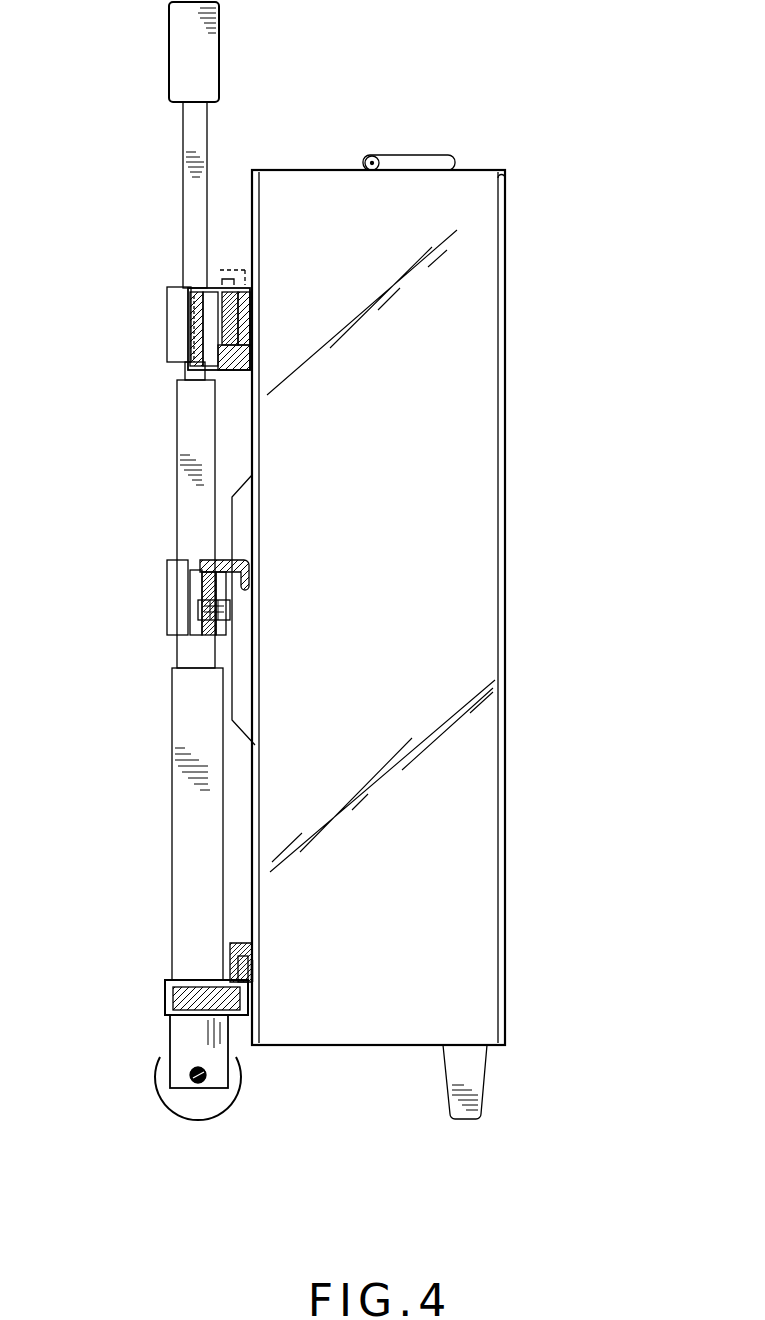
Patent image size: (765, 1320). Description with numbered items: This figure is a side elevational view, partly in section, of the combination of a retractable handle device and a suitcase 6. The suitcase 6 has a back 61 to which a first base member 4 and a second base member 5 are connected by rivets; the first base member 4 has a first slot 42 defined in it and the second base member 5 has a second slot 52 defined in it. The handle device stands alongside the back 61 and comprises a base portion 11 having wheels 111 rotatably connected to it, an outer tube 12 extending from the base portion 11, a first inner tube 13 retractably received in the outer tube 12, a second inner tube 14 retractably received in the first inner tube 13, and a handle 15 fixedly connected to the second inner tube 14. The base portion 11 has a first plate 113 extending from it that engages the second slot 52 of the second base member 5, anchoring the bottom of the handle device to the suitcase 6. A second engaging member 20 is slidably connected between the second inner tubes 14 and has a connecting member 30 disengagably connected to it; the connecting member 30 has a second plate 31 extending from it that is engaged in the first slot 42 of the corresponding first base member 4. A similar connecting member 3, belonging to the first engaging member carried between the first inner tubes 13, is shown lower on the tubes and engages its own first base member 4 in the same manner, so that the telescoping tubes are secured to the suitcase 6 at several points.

The suitcase 6 is at (470, 163).
The back of the suitcase 61 is at (255, 197).
The handle 15 is at (182, 62).
The second inner tube 14 is at (190, 221).
The second engaging member 20 is at (165, 327).
The connecting member 30 is at (218, 280).
The second plate 31 is at (247, 303).
The first slot 42 is at (250, 333).
The first inner tube 13 is at (178, 503).
The first base member 4 is at (243, 493).
The connecting member 3 is at (203, 572).
The outer tube 12 is at (178, 797).
The second base member 5 is at (243, 945).
The second slot 52 is at (240, 948).
The base portion 11 is at (178, 1034).
The wheel 111 is at (178, 1100).
The first plate 113 is at (242, 958).